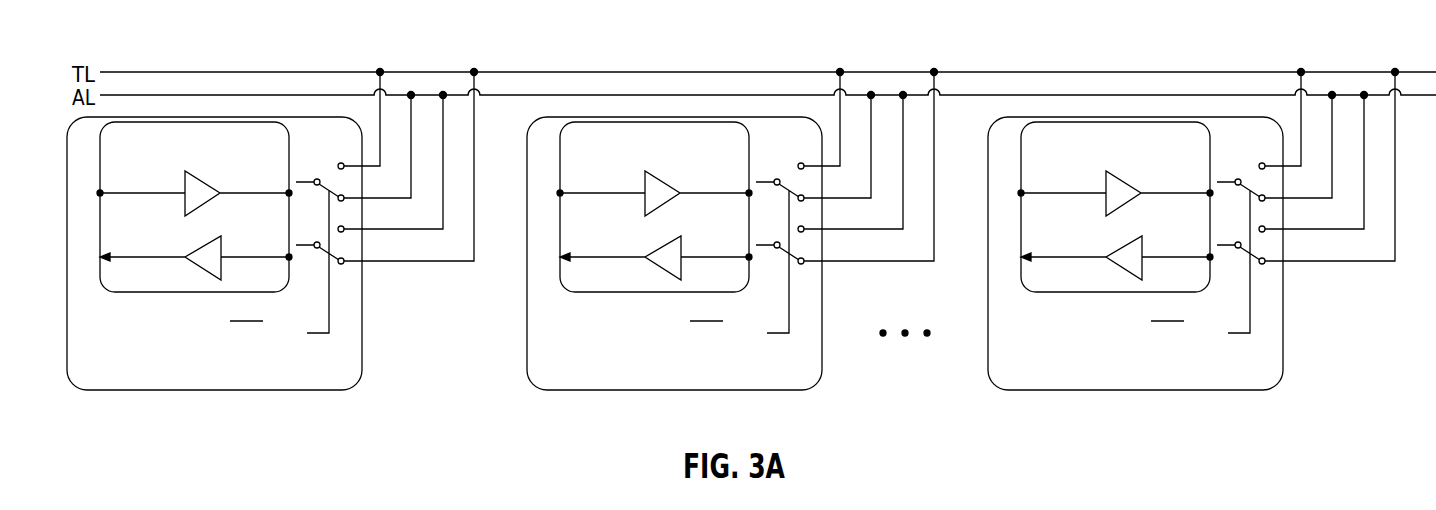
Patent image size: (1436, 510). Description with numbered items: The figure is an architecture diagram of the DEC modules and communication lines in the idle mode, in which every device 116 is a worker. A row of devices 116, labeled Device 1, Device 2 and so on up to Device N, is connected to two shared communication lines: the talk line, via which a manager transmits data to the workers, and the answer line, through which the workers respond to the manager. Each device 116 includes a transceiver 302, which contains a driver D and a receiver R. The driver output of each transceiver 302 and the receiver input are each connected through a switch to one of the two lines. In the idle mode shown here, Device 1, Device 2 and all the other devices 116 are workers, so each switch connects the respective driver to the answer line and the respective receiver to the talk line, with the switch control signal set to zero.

The device 116 is at (675, 272).
The transceiver 302 is at (113, 294).
The Device 1 is at (135, 392).
The Device 2 is at (674, 272).